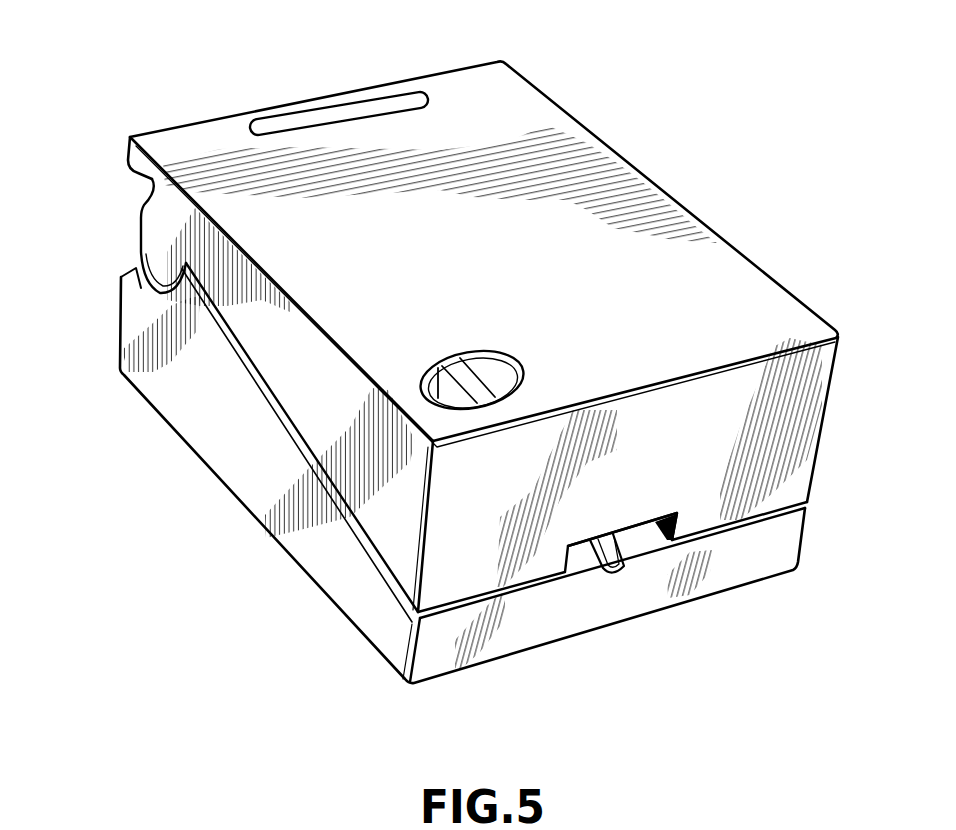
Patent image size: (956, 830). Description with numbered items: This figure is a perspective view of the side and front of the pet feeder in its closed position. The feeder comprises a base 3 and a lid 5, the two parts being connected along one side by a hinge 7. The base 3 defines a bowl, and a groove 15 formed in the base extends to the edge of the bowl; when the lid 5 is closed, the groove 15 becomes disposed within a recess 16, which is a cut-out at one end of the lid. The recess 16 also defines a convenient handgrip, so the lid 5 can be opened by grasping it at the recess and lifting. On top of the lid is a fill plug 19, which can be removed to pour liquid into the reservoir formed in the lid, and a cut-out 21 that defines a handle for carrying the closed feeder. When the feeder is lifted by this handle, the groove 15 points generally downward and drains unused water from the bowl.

The base 3 is at (340, 582).
The lid 5 is at (738, 280).
The hinge 7 is at (158, 234).
The groove 15 is at (637, 560).
The recess 16 is at (643, 520).
The fill plug 19 is at (472, 355).
The cut-out 21 is at (318, 120).